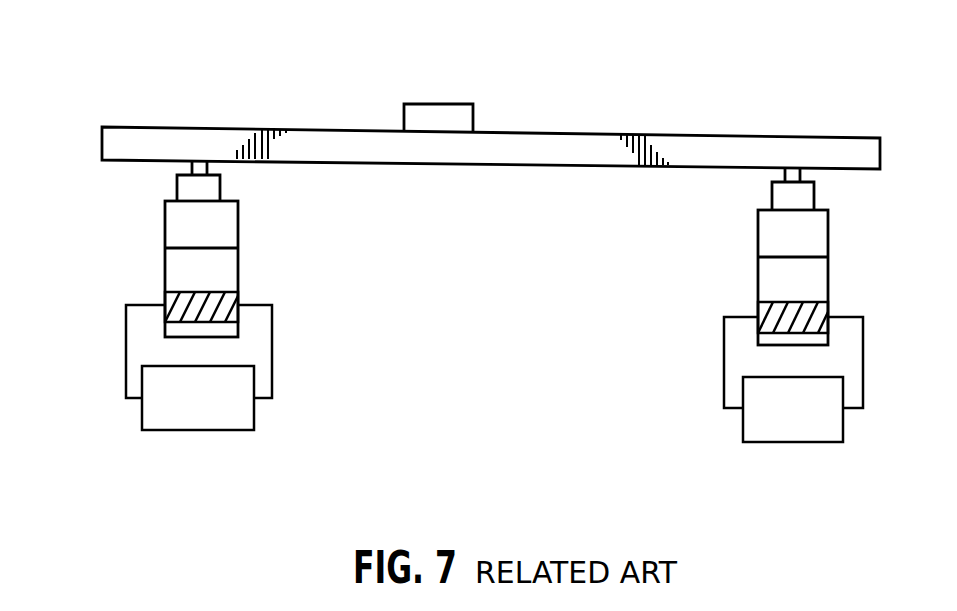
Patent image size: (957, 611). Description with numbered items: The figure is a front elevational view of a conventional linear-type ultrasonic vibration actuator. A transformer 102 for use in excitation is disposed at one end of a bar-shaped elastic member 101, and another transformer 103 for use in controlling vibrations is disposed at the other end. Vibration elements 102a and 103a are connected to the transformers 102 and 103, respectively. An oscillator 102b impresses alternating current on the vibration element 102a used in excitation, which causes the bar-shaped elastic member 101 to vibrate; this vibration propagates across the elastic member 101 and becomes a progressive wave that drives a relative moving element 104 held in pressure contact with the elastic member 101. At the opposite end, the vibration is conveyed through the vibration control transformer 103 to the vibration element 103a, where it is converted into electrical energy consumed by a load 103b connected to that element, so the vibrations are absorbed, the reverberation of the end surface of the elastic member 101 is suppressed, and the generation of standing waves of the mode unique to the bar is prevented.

The bar-shaped elastic member 101 is at (562, 132).
The transformer for use in excitation 102 is at (196, 249).
The vibration element 102a is at (213, 310).
The oscillator 102b is at (220, 420).
The vibration control transformer 103 is at (779, 256).
The vibration element 103a is at (777, 308).
The load 103b is at (792, 430).
The relative moving element 104 is at (433, 104).